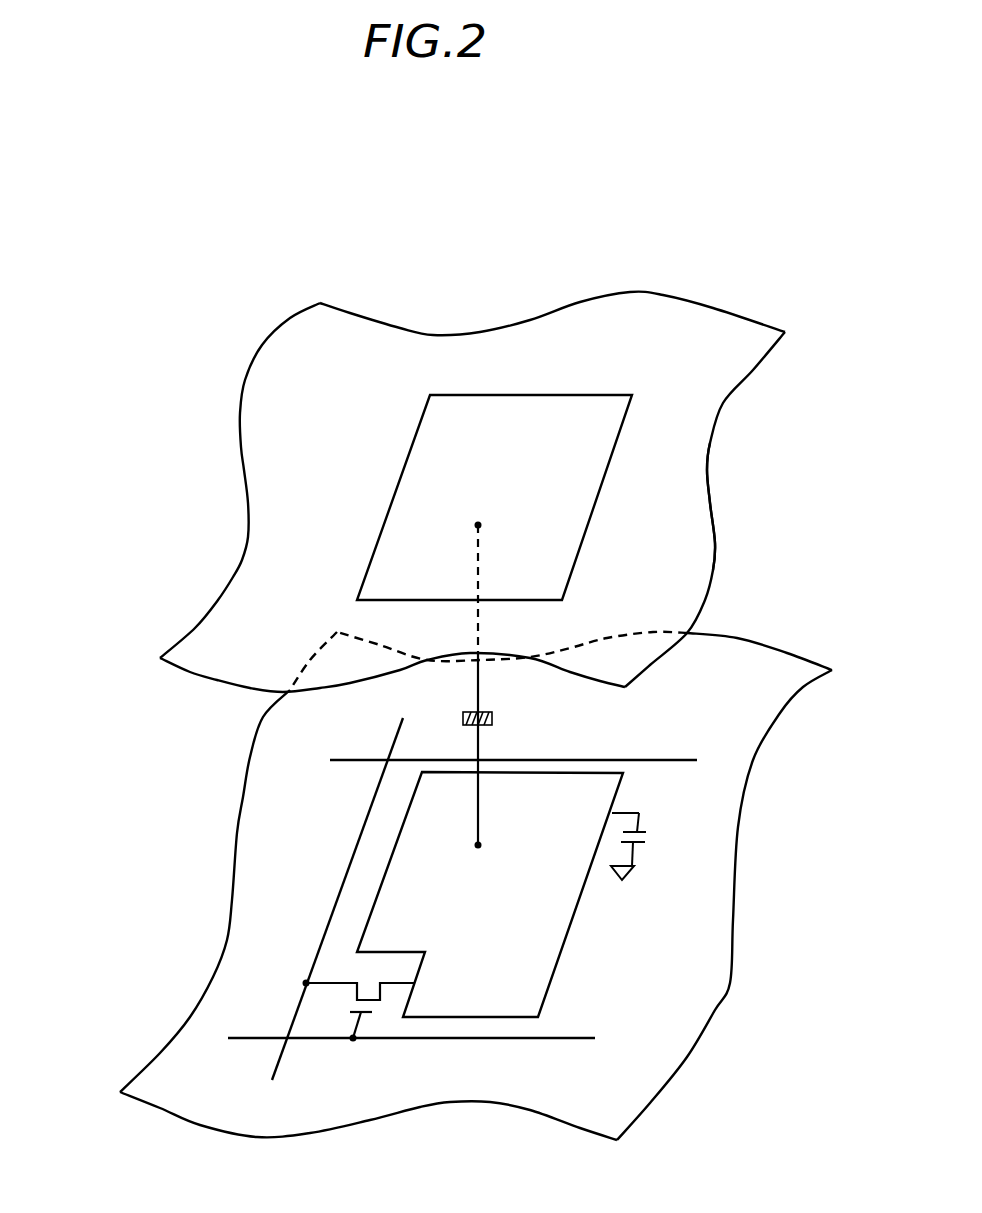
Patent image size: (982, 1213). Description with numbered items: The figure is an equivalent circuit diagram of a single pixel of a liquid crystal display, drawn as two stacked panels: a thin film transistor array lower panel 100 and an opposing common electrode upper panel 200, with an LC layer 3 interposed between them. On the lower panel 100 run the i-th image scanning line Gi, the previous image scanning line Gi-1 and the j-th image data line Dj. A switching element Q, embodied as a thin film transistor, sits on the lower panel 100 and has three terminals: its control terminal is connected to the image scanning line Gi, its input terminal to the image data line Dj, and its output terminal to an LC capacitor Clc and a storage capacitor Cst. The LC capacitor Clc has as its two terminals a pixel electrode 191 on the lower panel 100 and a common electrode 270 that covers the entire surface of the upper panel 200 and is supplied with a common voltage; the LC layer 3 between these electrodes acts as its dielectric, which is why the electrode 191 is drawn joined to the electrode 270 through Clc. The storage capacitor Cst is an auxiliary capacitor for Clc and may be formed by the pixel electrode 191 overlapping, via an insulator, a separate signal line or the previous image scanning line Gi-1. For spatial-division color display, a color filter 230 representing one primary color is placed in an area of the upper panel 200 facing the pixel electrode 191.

The LC layer 3 is at (144, 770).
The lower panel 100 is at (757, 859).
The upper panel 200 is at (740, 522).
The pixel electrode 191 is at (563, 948).
The color filter 230 is at (593, 513).
The common electrode 270 is at (708, 462).
The switching element Q is at (359, 1011).
The LC capacitor Clc is at (501, 685).
The storage capacitor Cst is at (652, 846).
The image scanning line Gi is at (410, 1019).
The previous image scanning line Gi-1 is at (498, 778).
The image data line Dj is at (337, 892).